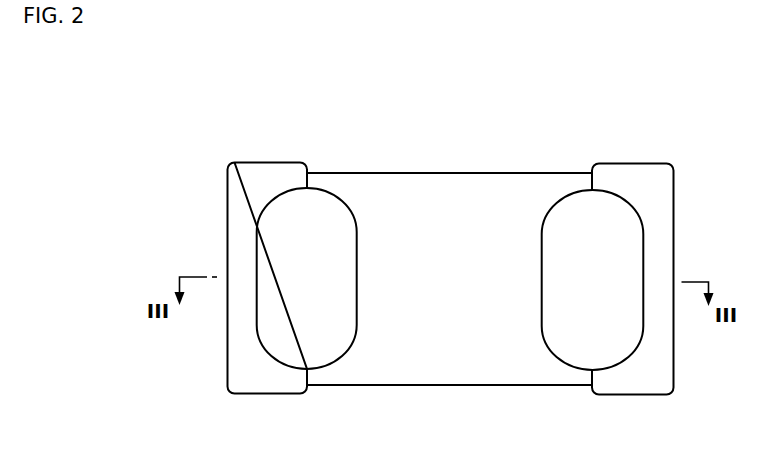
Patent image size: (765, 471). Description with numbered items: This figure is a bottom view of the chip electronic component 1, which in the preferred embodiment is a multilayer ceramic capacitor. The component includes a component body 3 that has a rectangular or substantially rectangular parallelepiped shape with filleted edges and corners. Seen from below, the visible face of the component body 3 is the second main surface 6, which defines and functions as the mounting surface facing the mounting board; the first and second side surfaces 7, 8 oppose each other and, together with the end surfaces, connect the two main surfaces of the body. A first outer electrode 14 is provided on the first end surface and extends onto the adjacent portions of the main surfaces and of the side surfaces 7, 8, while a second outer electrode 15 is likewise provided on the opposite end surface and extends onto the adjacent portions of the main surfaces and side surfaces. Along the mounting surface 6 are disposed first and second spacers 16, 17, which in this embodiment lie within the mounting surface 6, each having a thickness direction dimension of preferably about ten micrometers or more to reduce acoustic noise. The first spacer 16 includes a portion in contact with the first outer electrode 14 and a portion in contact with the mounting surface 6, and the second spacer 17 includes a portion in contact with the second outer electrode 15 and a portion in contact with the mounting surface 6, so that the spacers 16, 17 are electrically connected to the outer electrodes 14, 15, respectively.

The chip electronic component 1 is at (457, 123).
The component body 3 is at (401, 165).
The second main surface 6 is at (495, 172).
The first side surface 7 is at (432, 387).
The second side surface 8 is at (349, 173).
The first outer electrode 14 is at (254, 170).
The second outer electrode 15 is at (622, 172).
The first spacer 16 is at (280, 352).
The second spacer 17 is at (612, 358).